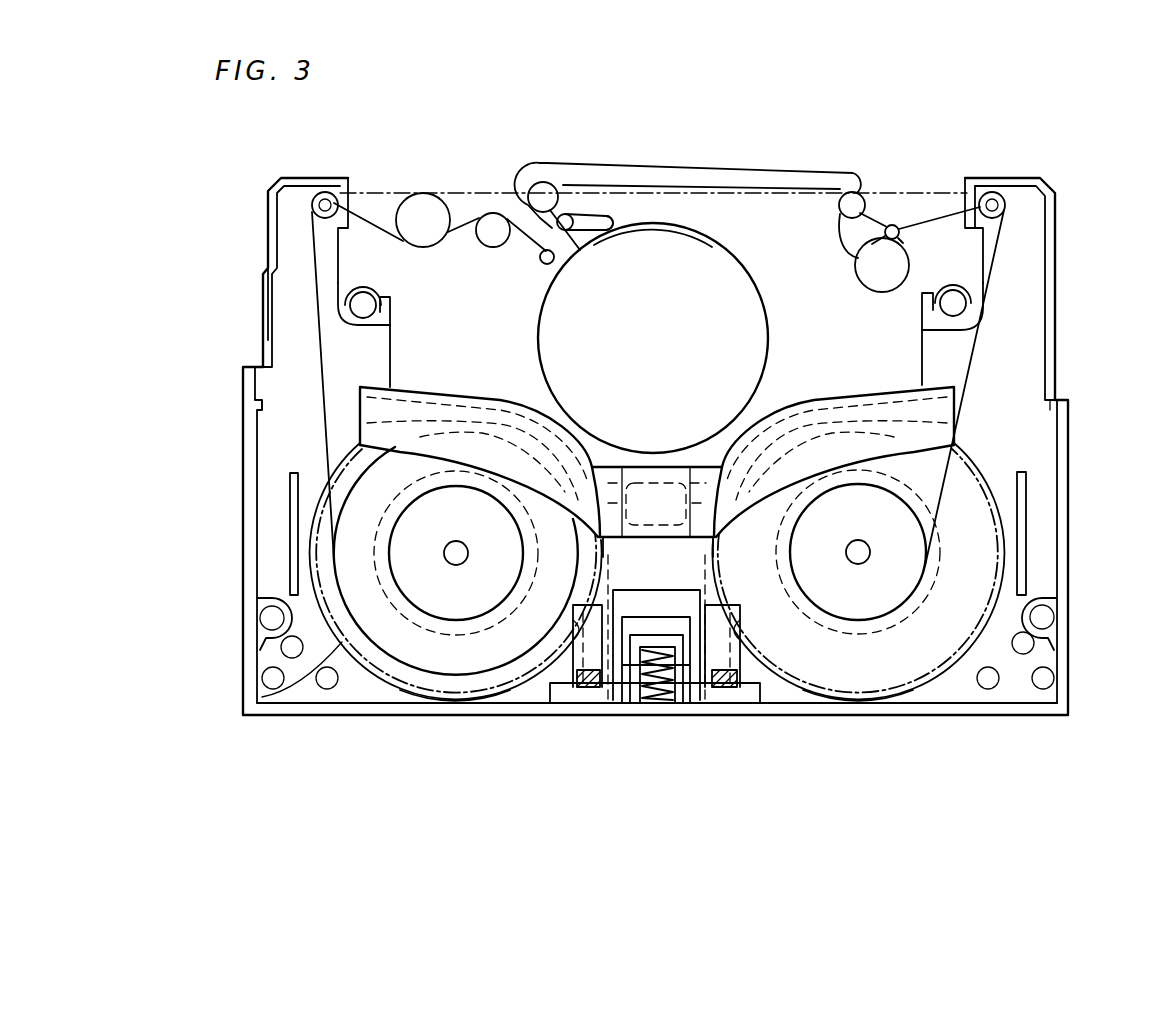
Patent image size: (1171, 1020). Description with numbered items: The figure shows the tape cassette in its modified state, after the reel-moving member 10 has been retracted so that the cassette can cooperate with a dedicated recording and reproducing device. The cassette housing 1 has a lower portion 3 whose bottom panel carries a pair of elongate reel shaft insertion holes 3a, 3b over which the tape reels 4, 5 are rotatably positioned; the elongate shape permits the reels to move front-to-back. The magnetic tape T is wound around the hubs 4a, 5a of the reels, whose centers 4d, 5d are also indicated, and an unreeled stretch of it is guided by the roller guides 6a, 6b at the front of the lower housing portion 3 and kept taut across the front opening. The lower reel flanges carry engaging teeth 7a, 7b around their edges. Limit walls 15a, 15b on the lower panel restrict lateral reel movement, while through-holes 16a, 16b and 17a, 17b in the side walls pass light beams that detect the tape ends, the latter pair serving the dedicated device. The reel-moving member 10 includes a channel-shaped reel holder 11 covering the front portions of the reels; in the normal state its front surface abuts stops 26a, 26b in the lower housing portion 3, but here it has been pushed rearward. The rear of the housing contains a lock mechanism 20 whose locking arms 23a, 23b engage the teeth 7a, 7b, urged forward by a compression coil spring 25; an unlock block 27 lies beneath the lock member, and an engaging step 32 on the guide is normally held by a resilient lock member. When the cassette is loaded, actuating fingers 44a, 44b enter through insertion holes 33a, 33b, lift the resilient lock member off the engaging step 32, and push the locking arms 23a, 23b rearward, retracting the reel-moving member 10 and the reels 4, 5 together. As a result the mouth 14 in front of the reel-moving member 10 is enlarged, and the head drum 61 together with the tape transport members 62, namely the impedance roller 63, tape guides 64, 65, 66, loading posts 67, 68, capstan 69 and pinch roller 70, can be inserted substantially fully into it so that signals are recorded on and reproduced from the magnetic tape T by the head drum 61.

The cassette housing 1 is at (655, 494).
The lower portion 3 is at (343, 720).
The reel shaft insertion hole 3a is at (428, 613).
The reel shaft insertion hole 3b is at (907, 633).
The tape reel 4 is at (380, 579).
The hub 4a is at (417, 593).
The supply reel hub 4d is at (443, 553).
The tape reel 5 is at (926, 575).
The hub 5a is at (893, 580).
The take-up reel hub 5d is at (862, 553).
The roller guide 6a is at (325, 192).
The roller guide 6b is at (1000, 192).
The engaging teeth 7a is at (463, 690).
The engaging teeth 7b is at (873, 693).
The reel-moving member 10 is at (500, 398).
The reel holder 11 is at (800, 423).
The mouth 14 is at (766, 260).
The limit wall 15a is at (295, 527).
The limit wall 15b is at (1020, 530).
The through-hole 16a is at (263, 338).
The through-hole 16b is at (1050, 340).
The through-hole 17a is at (258, 488).
The through-hole 17b is at (1060, 485).
The lock mechanism 20 is at (665, 725).
The locking arm 23a is at (585, 690).
The locking arm 23b is at (735, 690).
The compression coil spring 25 is at (635, 700).
The stop 26a is at (390, 305).
The stop 26b is at (923, 310).
The unlock block 27 is at (657, 595).
The engaging step 32 is at (700, 700).
The insertion hole 33a is at (553, 700).
The insertion hole 33b is at (765, 682).
The actuating finger 44a is at (590, 690).
The actuating finger 44b is at (727, 688).
The head drum 61 is at (714, 264).
The tape transport members 62 is at (556, 160).
The impedance roller 63 is at (422, 193).
The tape guide 64 is at (493, 213).
The tape guide 65 is at (528, 205).
The tape guide 66 is at (853, 197).
The loading post 67 is at (605, 215).
The loading post 68 is at (566, 214).
The capstan 69 is at (897, 228).
The pinch roller 70 is at (865, 262).
The magnetic tape T is at (722, 192).